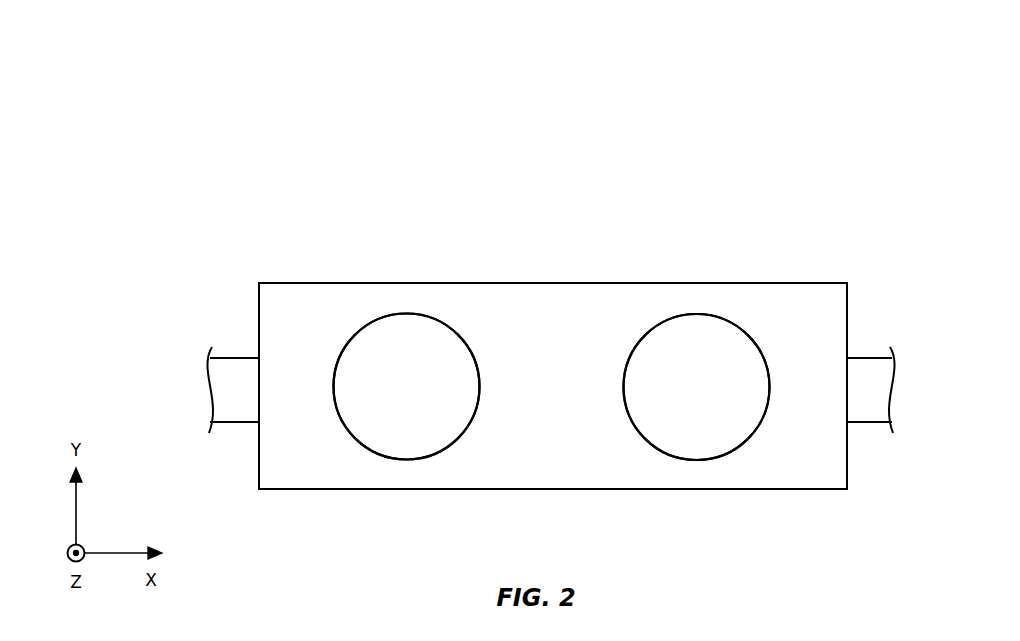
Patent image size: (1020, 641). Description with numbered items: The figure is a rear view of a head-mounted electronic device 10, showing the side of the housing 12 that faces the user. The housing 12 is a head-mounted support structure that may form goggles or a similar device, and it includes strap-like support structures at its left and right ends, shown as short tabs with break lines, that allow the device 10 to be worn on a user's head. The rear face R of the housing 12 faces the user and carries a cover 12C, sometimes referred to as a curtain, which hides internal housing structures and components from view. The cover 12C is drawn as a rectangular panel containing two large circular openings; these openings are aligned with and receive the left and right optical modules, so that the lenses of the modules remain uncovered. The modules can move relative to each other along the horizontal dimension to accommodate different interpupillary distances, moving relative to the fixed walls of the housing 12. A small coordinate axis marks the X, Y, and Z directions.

The electronic device 10 is at (820, 161).
The housing 12 is at (818, 281).
The cover 12C is at (572, 483).
The rear face R is at (343, 458).